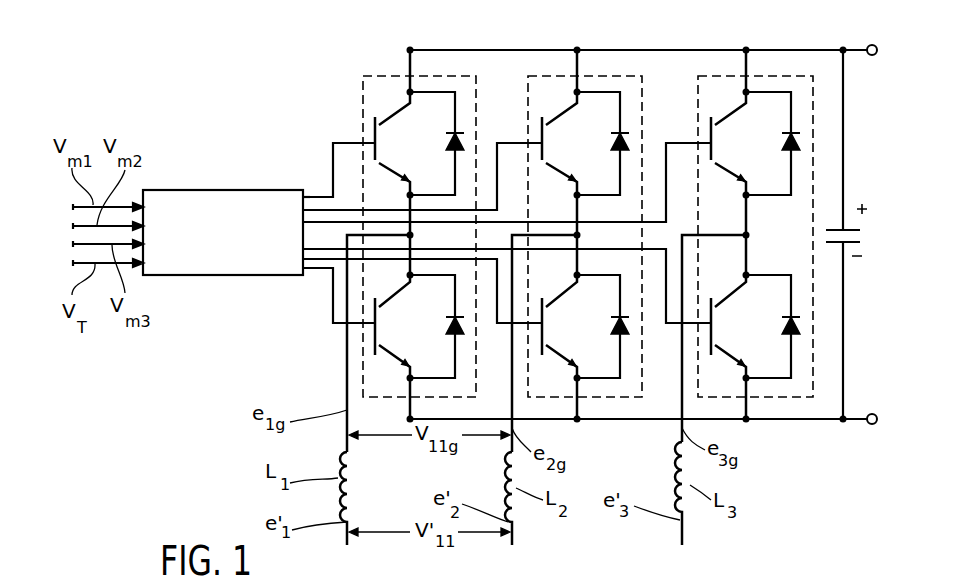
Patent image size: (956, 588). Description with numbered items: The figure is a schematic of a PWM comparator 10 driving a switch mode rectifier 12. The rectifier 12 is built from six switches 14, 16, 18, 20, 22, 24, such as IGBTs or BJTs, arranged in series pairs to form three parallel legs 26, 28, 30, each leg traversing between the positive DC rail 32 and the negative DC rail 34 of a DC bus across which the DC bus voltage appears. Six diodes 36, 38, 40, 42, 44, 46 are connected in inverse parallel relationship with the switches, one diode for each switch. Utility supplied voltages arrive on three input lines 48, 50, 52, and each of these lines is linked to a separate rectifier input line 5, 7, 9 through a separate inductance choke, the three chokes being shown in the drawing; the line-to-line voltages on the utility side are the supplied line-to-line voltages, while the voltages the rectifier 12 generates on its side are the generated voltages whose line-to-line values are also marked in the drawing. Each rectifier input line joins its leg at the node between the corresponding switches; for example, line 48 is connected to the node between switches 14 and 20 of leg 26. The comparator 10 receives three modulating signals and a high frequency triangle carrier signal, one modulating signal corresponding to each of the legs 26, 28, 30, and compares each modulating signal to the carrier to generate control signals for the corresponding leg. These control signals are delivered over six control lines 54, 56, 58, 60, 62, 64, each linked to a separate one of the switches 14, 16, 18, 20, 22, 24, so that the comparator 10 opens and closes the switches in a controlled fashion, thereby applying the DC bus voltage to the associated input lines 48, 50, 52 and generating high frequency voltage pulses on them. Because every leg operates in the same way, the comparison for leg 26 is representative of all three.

The rectifier input line 5 is at (342, 432).
The rectifier input line 7 is at (508, 447).
The rectifier input line 9 is at (680, 445).
The PWM comparator 10 is at (176, 190).
The switch mode rectifier 12 is at (600, 32).
The switch 14 is at (373, 162).
The switch 16 is at (540, 162).
The switch 18 is at (709, 162).
The switch 20 is at (373, 357).
The switch 22 is at (540, 357).
The switch 24 is at (709, 357).
The leg 26 is at (452, 76).
The leg 28 is at (617, 76).
The leg 30 is at (805, 82).
The positive DC rail 32 is at (785, 50).
The negative DC rail 34 is at (768, 423).
The diode 36 is at (445, 143).
The diode 38 is at (611, 143).
The diode 40 is at (781, 143).
The diode 42 is at (445, 325).
The diode 44 is at (611, 325).
The diode 46 is at (781, 325).
The input line 48 is at (346, 542).
The input line 50 is at (510, 543).
The input line 52 is at (680, 542).
The control line 54 is at (306, 197).
The control line 56 is at (324, 197).
The control line 58 is at (333, 210).
The control line 60 is at (312, 271).
The control line 62 is at (341, 327).
The control line 64 is at (323, 270).